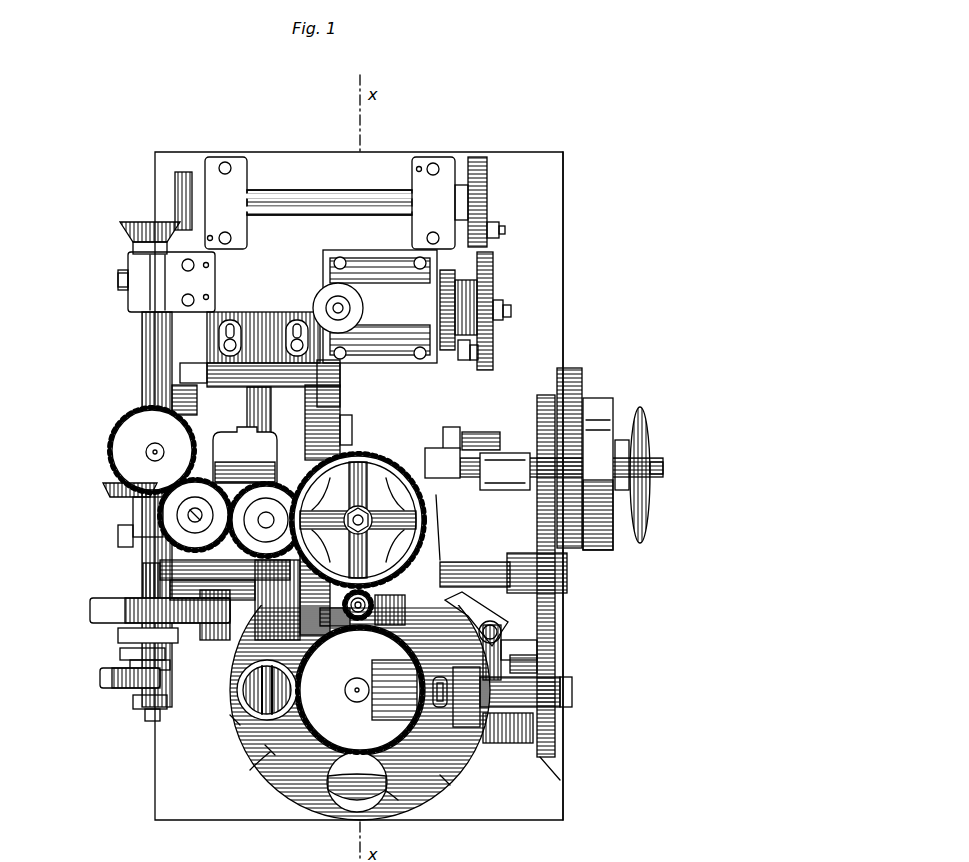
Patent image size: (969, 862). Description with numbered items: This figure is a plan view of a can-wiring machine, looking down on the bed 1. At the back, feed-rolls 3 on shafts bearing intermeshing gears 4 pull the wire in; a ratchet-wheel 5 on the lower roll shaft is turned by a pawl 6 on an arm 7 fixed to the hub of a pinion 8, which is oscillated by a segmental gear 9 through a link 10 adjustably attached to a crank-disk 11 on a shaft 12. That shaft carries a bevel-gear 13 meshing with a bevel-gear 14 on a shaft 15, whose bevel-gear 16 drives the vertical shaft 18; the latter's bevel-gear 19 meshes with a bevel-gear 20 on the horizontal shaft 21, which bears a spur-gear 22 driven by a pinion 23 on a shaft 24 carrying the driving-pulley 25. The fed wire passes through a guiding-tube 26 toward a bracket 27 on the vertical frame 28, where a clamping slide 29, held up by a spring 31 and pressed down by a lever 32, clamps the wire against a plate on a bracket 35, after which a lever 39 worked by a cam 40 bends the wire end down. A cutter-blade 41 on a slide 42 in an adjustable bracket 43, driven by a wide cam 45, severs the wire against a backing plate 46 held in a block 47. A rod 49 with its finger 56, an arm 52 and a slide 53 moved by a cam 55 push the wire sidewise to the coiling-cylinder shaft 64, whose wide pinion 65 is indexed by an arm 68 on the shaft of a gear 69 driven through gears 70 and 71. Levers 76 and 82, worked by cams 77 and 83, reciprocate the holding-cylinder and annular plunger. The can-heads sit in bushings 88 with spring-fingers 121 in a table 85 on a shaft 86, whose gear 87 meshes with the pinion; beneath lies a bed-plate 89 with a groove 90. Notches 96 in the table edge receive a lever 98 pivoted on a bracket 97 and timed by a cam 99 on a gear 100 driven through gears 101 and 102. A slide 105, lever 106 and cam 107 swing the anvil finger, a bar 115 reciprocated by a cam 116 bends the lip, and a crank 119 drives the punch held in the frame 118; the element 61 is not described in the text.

The bed 1 is at (548, 305).
The feed-rolls 3 is at (317, 273).
The intermeshing gears 4 is at (455, 280).
The ratchet-wheel 5 is at (475, 283).
The pawl 6 is at (455, 343).
The arm 7 is at (472, 350).
The pinion 8 is at (505, 315).
The segmental gear 9 is at (493, 282).
The link 10 is at (500, 230).
The crank-disk 11 is at (478, 165).
The shaft 12 is at (385, 195).
The bevel-gear 13 is at (185, 168).
The bevel-gear 14 is at (140, 222).
The shaft 15 is at (142, 330).
The bevel-gear 16 is at (120, 495).
The vertical shaft 18 is at (130, 430).
The bevel-gear 19 is at (150, 450).
The bevel-gear 20 is at (150, 382).
The horizontal shaft 21 is at (522, 430).
The spur-gear 22 is at (582, 375).
The pinion 23 is at (663, 468).
The shaft 24 is at (628, 460).
The driving-pulley 25 is at (645, 495).
The guiding-tube 26 is at (370, 360).
The bracket 27 is at (305, 538).
The vertical frame 28 is at (480, 530).
The slide 29 is at (322, 628).
The spring 31 is at (335, 655).
The lever 32 is at (265, 603).
The bracket 35 is at (125, 634).
The lever 39 is at (258, 618).
The cam 40 is at (318, 405).
The cutter-blade 41 is at (260, 392).
The slide 42 is at (202, 365).
The bracket 43 is at (265, 365).
The cam 45 is at (150, 395).
The backing plate 46 is at (345, 390).
The block 47 is at (355, 402).
The rod 49 is at (150, 572).
The arm 52 is at (150, 578).
The slide 53 is at (150, 590).
The cam 55 is at (90, 608).
The finger 56 is at (125, 540).
The lever 61 is at (440, 515).
The shaft 64 is at (358, 620).
The wide pinion 65 is at (378, 628).
The arm 68 is at (300, 500).
The gear 69 is at (268, 457).
The gear 70 is at (133, 518).
The gear 71 is at (135, 473).
The lever 76 is at (465, 433).
The cam 77 is at (447, 427).
The lever 82 is at (362, 452).
The cam 83 is at (346, 422).
The table 85 is at (265, 752).
The shaft 86 is at (357, 702).
The gear 87 is at (447, 780).
The bushings 88 is at (290, 770).
The bed-plate 89 is at (270, 750).
The groove 90 is at (275, 778).
The notches 96 is at (268, 783).
The bracket 97 is at (537, 658).
The lever 98 is at (480, 625).
The cam 99 is at (512, 648).
The gear 100 is at (567, 708).
The gear 101 is at (567, 588).
The gear 102 is at (612, 400).
The slide 105 is at (235, 718).
The lever 106 is at (148, 705).
The cam 107 is at (115, 690).
The bar 115 is at (135, 665).
The cam 116 is at (128, 650).
The frame 118 is at (572, 690).
The crank 119 is at (545, 760).
The spring-fingers 121 is at (352, 800).